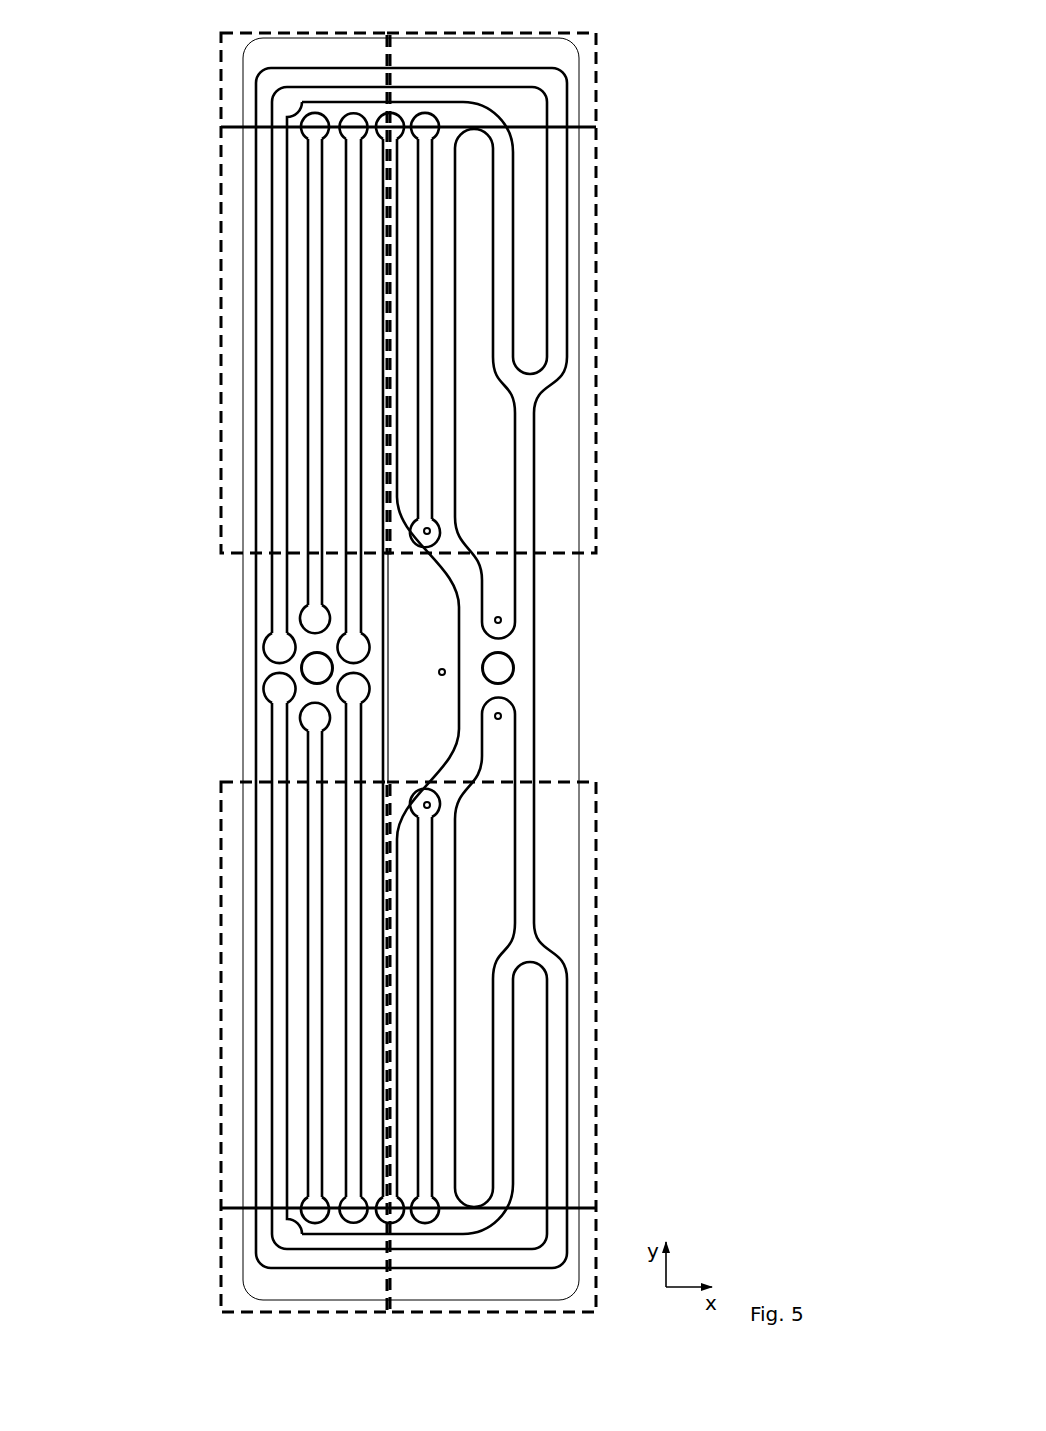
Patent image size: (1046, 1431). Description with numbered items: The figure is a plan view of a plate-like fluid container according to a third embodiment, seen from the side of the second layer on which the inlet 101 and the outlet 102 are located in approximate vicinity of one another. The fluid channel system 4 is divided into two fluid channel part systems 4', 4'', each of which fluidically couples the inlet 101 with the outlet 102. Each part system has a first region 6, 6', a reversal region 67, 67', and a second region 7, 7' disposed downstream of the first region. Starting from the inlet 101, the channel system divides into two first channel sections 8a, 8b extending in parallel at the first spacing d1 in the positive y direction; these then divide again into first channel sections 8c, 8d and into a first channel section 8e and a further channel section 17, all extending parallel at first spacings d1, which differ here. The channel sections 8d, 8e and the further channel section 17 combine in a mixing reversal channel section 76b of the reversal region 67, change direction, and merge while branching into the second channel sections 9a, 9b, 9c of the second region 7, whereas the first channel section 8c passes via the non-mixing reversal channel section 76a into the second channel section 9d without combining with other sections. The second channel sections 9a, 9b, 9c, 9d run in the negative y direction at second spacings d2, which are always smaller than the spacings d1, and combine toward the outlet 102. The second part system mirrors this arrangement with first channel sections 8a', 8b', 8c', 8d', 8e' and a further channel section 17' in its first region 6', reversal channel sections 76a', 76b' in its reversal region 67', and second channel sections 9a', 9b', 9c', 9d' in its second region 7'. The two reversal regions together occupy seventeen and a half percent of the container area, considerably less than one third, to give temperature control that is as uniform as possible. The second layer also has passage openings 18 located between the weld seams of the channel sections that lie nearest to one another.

The fluid channel system 4 is at (594, 722).
The fluid channel part system 4' is at (607, 434).
The fluid channel part system 4'' is at (600, 956).
The first region 6 is at (536, 293).
The first region 6' is at (533, 1047).
The second region 7 is at (270, 293).
The second region 7' is at (265, 1047).
The first channel section 8a is at (562, 498).
The first channel section 8a' is at (564, 839).
The first channel section 8b is at (420, 562).
The first channel section 8b' is at (428, 668).
The first channel section 8c is at (540, 316).
The first channel section 8c' is at (540, 1006).
The first channel section 8d is at (542, 230).
The first channel section 8d' is at (546, 1105).
The first channel section 8e is at (560, 320).
The first channel section 8e' is at (563, 1013).
The second channel section 9a is at (205, 368).
The second channel section 9a' is at (206, 968).
The second channel section 9b is at (265, 375).
The second channel section 9b' is at (266, 961).
The second channel section 9c is at (221, 373).
The second channel section 9c' is at (223, 963).
The second channel section 9d is at (252, 388).
The second channel section 9d' is at (255, 948).
The further channel section 17 is at (523, 390).
The further channel section 17' is at (520, 945).
The passage opening 18 is at (433, 530).
The reversal region 67 is at (609, 120).
The reversal region 67' is at (603, 1202).
The non-mixing reversal channel section 76a is at (410, 41).
The reversal channel section 76a' is at (410, 1304).
The mixing reversal channel section 76b is at (394, 56).
The reversal channel section 76b' is at (382, 1290).
The inlet 101 is at (517, 668).
The outlet 102 is at (300, 668).
The first spacing d1 is at (490, 276).
The second spacing d2 is at (302, 484).